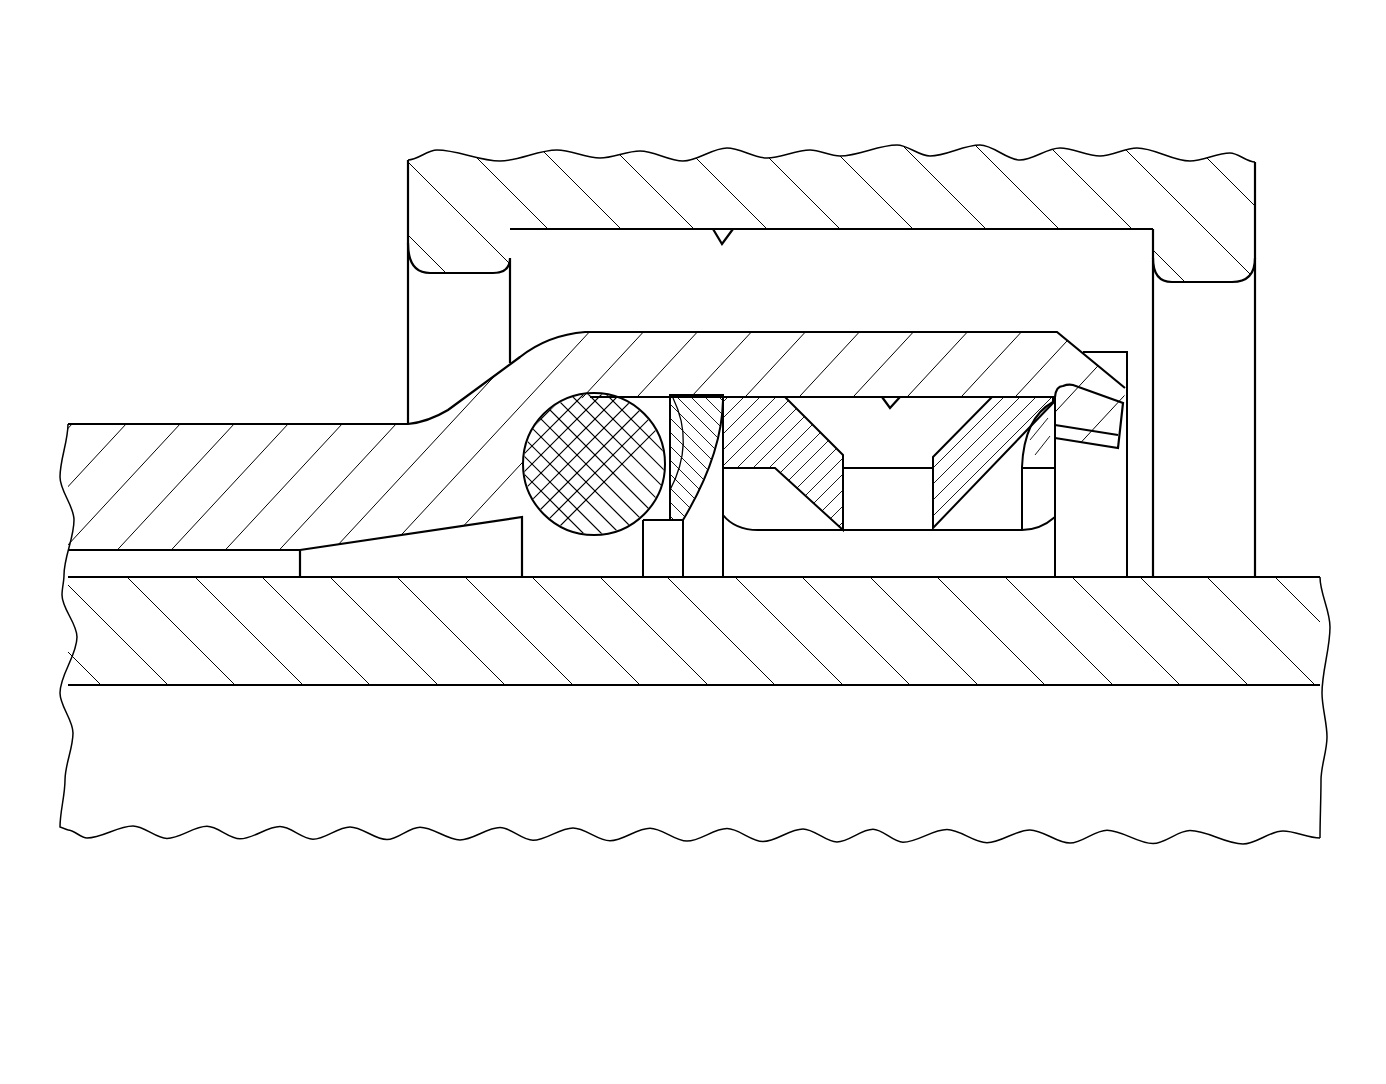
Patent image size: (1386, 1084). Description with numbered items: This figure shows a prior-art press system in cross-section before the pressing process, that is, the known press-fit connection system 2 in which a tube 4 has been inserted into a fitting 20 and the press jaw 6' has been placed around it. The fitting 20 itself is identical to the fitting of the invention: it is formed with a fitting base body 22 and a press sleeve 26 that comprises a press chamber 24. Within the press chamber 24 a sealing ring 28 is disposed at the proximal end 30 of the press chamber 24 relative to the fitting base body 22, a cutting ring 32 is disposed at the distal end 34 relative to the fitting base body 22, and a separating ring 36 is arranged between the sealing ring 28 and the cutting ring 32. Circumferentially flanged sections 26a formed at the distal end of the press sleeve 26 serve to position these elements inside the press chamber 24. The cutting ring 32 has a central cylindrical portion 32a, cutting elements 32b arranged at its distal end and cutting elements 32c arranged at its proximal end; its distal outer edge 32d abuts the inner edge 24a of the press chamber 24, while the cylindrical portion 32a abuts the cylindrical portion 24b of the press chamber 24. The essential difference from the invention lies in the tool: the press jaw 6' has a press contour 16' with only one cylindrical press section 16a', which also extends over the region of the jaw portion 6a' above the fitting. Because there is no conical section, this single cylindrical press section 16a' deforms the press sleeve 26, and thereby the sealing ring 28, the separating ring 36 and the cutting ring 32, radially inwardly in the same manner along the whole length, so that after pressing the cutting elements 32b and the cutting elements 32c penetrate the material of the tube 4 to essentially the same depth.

The press-fit connection system 2 is at (254, 203).
The tube 4 is at (1207, 660).
The press jaw 6' is at (779, 323).
The housing portion 6a' is at (1164, 324).
The press contour 16' is at (780, 216).
The cylindrical press section 16a' is at (748, 158).
The fitting 20 is at (145, 388).
The fitting base body 22 is at (226, 455).
The press chamber 24 is at (653, 415).
The inner edge 24a is at (1127, 405).
The cylindrical portion 24b is at (900, 397).
The press sleeve 26 is at (826, 318).
The circumferentially flanged sections 26a is at (1083, 418).
The sealing ring 28 is at (580, 520).
The proximal end 30 is at (485, 345).
The cutting ring 32 is at (861, 545).
The central cylindrical portion 32a is at (900, 447).
The cutting elements 32b is at (958, 473).
The cutting elements 32c is at (827, 487).
The distal outer edge 32d is at (1018, 468).
The distal end 34 is at (1122, 334).
The separating ring 36 is at (673, 503).